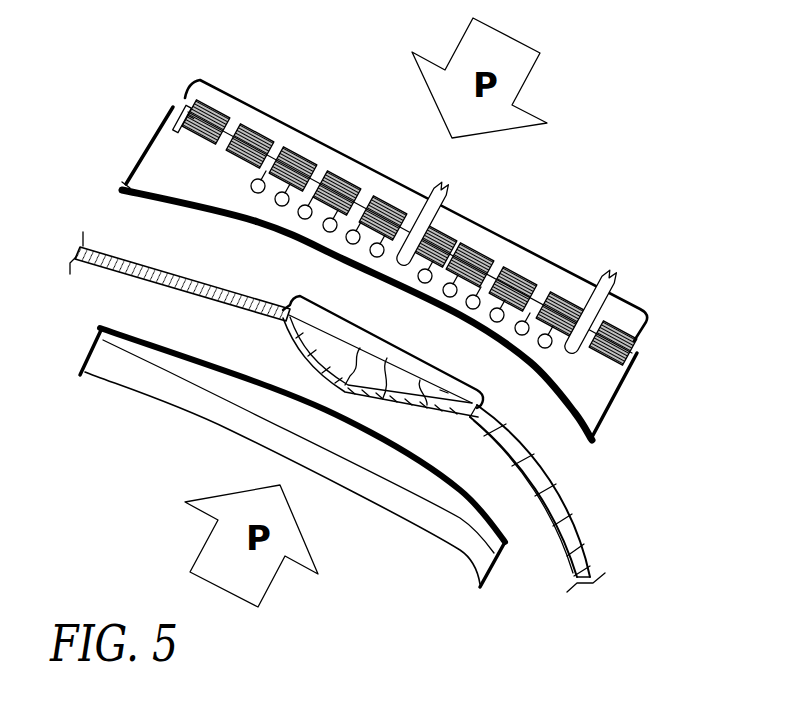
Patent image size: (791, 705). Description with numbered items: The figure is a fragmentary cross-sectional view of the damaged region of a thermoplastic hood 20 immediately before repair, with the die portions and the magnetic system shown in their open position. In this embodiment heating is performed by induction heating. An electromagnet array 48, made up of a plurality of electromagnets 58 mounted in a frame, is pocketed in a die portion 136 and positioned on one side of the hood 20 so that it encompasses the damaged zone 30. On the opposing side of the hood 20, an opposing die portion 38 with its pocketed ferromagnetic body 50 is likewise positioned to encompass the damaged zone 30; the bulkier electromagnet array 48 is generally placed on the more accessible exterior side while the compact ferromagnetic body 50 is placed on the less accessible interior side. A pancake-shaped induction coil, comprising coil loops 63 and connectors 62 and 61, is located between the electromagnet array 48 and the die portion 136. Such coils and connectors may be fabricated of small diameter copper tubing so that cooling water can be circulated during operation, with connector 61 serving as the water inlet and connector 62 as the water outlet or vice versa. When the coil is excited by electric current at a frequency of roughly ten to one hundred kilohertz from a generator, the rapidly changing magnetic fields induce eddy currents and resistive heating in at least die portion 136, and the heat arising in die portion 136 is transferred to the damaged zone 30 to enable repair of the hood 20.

The hood 20 is at (594, 530).
The damaged zone 30 is at (403, 348).
The die portion 38 is at (417, 468).
The electromagnet array 48 is at (437, 194).
The ferromagnetic body 50 is at (185, 407).
The electromagnets 58 is at (302, 156).
The connector 61 is at (448, 200).
The connector 62 is at (618, 287).
The coil loops 63 is at (523, 325).
The die portion 136 is at (556, 385).